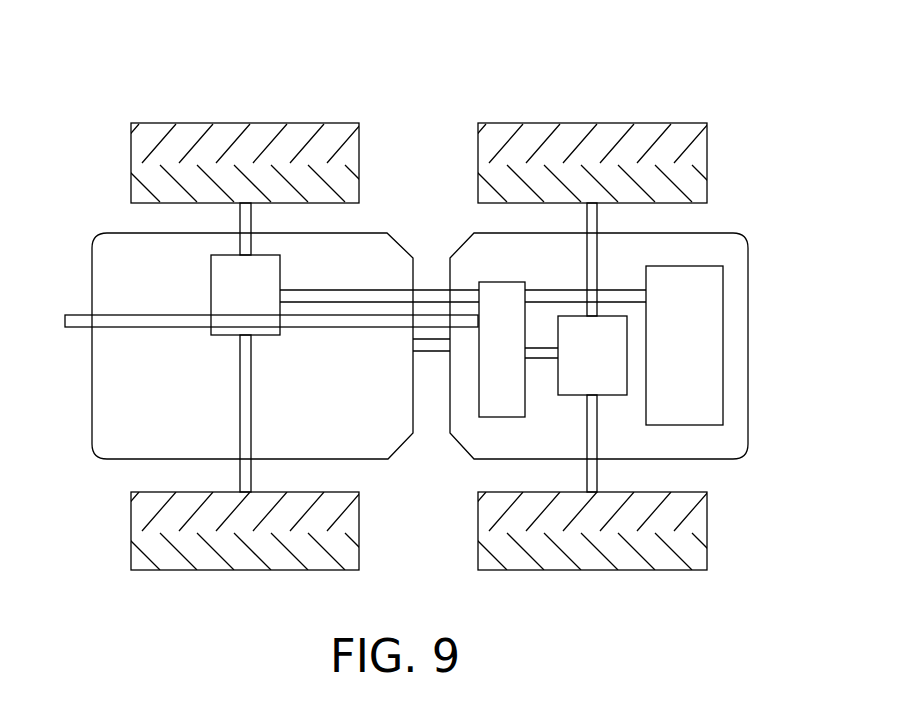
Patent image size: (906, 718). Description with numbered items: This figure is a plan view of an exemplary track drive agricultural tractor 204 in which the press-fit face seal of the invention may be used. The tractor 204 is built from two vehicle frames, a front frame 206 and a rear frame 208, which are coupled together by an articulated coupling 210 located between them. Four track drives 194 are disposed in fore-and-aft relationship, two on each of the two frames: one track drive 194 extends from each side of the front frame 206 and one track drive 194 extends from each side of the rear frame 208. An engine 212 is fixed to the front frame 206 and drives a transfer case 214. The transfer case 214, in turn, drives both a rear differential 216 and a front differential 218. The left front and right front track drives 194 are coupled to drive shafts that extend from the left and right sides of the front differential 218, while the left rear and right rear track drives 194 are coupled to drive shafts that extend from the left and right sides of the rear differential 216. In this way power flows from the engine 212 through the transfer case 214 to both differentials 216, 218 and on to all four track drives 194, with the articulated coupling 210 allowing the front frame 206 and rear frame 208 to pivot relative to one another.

The track drives 194 is at (157, 122).
The track drive agricultural tractor 204 is at (551, 80).
The front frame 206 is at (700, 247).
The rear frame 208 is at (365, 232).
The articulated coupling 210 is at (432, 353).
The engine 212 is at (666, 337).
The transfer case 214 is at (493, 417).
The rear differential 216 is at (226, 294).
The front differential 218 is at (573, 361).